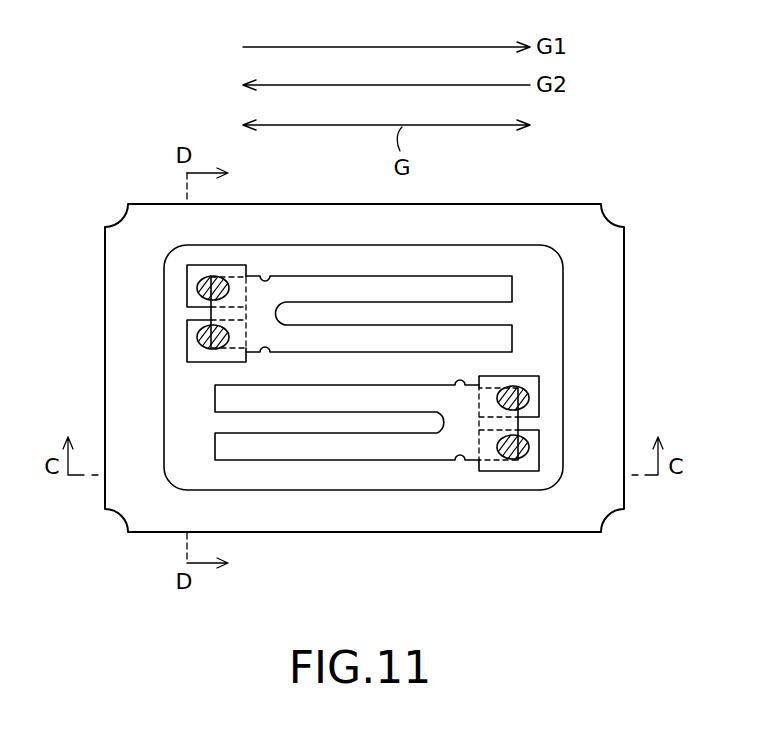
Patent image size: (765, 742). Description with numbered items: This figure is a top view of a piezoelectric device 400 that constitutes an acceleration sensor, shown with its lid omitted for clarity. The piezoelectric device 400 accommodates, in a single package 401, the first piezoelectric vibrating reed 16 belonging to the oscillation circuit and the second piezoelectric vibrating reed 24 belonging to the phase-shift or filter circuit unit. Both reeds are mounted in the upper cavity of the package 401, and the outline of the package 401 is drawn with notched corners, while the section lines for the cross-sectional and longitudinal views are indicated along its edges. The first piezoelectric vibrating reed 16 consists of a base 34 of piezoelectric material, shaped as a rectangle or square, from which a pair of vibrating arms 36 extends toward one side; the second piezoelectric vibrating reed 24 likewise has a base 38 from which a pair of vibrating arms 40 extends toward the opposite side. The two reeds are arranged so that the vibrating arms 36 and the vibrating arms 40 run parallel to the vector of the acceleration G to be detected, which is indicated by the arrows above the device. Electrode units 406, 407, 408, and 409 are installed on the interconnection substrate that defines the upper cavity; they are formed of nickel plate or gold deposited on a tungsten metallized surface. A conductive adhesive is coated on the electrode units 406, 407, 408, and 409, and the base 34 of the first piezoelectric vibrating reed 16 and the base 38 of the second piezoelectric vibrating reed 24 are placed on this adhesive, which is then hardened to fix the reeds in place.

The piezoelectric device 400 is at (381, 349).
The package 401 is at (636, 259).
The first piezoelectric vibrating reed 16 is at (354, 252).
The vibrating arms 36 is at (455, 285).
The vibrating arms 40 is at (298, 450).
The second piezoelectric vibrating reed 24 is at (347, 481).
The base 34 is at (161, 263).
The base 38 is at (575, 477).
The electrode unit 406 is at (190, 277).
The electrode unit 407 is at (190, 351).
The electrode unit 408 is at (540, 388).
The electrode unit 409 is at (540, 453).